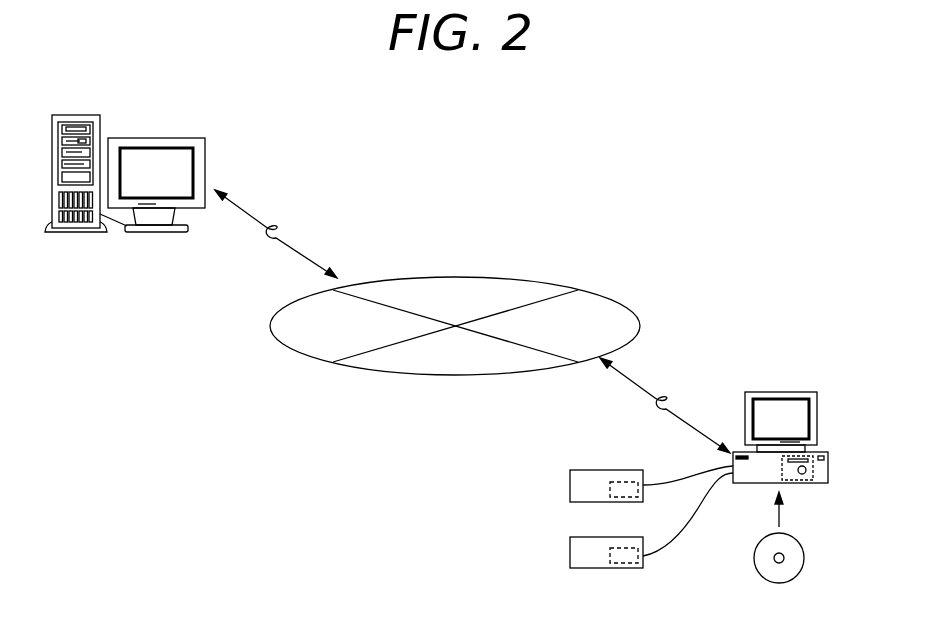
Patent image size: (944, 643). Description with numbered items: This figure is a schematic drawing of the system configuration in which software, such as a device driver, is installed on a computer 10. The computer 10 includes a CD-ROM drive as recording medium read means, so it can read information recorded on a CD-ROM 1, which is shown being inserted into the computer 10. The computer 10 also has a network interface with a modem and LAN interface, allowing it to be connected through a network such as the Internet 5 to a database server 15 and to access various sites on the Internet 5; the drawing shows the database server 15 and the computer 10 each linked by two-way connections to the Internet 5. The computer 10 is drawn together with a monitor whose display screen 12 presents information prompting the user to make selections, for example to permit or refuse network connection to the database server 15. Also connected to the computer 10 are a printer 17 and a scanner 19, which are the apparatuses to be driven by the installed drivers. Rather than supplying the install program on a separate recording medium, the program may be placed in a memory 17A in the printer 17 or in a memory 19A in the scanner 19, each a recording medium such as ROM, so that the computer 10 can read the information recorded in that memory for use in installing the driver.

The database server 15 is at (228, 154).
The Internet 5 is at (562, 250).
The computer 10 is at (808, 420).
The display screen 12 is at (880, 419).
The printer 17 is at (589, 479).
The memory in the printer 17A is at (630, 482).
The scanner 19 is at (623, 563).
The memory in the scanner 19A is at (643, 557).
The CD-ROM 1 is at (803, 549).